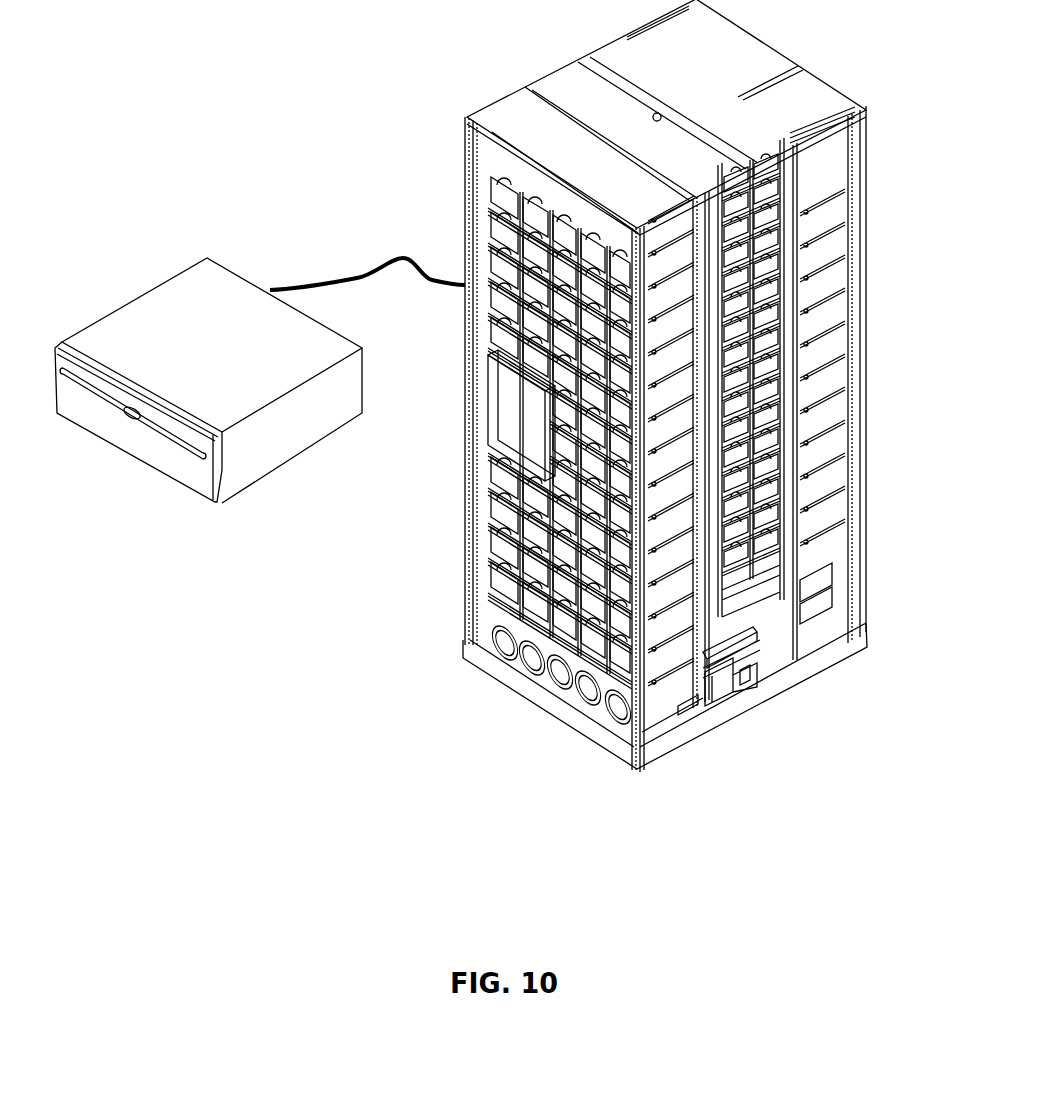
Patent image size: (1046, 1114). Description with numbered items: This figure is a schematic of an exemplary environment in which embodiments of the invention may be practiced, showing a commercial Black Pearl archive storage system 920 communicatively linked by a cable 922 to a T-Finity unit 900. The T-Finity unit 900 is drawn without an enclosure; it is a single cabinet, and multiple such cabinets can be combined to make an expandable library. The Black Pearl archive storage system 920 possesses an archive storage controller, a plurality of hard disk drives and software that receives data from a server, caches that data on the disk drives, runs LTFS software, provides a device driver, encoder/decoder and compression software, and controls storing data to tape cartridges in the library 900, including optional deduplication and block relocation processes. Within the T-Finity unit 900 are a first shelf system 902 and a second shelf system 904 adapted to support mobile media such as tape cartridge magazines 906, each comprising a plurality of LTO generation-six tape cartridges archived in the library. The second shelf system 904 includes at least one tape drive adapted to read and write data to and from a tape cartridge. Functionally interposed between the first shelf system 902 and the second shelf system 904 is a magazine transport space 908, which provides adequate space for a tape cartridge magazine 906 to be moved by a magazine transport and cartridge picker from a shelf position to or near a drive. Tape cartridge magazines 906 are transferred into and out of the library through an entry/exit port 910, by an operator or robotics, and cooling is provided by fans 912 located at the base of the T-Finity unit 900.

The T-Finity unit 900 is at (500, 63).
The first shelf system 902 is at (450, 493).
The second shelf system 904 is at (877, 397).
The tape cartridge magazines 906 is at (490, 246).
The magazine transport space 908 is at (762, 657).
The entry/exit port 910 is at (508, 415).
The fans 912 is at (500, 680).
The Black Pearl archive storage system 920 is at (187, 267).
The cable 922 is at (362, 277).